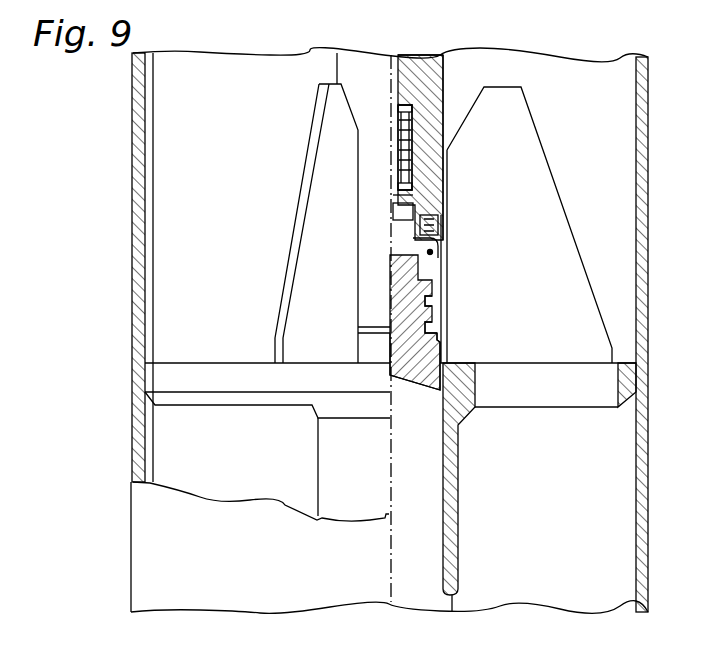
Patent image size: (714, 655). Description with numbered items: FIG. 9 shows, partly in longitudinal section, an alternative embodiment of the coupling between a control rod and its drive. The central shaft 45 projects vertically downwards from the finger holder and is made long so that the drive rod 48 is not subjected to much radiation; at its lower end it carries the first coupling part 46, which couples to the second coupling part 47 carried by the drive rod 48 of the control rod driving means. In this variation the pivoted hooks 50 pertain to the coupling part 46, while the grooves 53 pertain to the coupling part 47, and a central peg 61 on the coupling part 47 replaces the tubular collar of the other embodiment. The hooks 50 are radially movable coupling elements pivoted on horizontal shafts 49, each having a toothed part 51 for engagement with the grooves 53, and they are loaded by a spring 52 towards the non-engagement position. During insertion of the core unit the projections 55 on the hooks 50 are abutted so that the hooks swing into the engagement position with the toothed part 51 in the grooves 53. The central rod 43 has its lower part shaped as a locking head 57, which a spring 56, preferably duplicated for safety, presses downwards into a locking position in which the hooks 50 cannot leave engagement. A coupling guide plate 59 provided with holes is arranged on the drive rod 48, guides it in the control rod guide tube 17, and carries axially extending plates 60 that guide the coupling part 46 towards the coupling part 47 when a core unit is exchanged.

The control rod guide tube 17 is at (636, 546).
The central rod 43 is at (445, 63).
The central shaft 45 is at (445, 89).
The first coupling part 46 is at (445, 172).
The second coupling part 47 is at (425, 353).
The drive rod 48 is at (420, 508).
The horizontal shafts 49 is at (434, 253).
The hooks 50 is at (442, 281).
The toothed part 51 is at (434, 308).
The spring 52 is at (440, 224).
The grooves 53 is at (428, 318).
The projections 55 is at (412, 249).
The spring 56 is at (401, 118).
The locking head 57 is at (400, 207).
The coupling guide plate 59 is at (562, 403).
The axially extending plates 60 is at (544, 195).
The central peg 61 is at (403, 277).